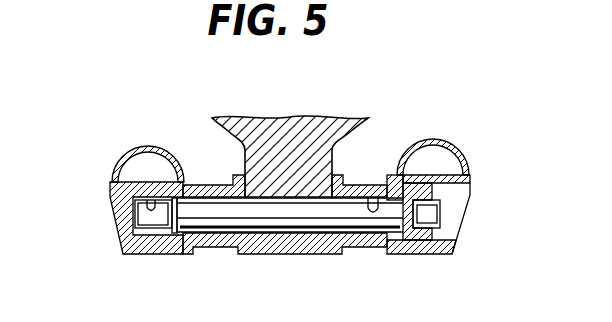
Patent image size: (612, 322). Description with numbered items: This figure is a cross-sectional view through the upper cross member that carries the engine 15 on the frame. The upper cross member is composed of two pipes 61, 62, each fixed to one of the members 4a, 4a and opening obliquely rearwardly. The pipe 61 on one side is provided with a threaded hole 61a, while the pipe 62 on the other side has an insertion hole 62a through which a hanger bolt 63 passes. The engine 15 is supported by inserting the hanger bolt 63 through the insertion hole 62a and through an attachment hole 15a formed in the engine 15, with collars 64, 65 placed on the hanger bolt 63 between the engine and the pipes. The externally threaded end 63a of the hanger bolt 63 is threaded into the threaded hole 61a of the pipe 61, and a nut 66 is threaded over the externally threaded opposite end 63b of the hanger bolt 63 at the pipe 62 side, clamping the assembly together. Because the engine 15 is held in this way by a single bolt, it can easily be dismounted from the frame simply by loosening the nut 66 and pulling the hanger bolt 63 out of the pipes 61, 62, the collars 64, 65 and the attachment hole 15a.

The engine 15 is at (289, 123).
The attachment hole 15a is at (320, 229).
The members 4a is at (125, 158).
The pipe 61 is at (122, 212).
The threaded hole 61a is at (152, 200).
The pipe 62 is at (457, 203).
The insertion hole 62a is at (373, 200).
The hanger bolt 63 is at (286, 236).
The externally threaded end 63a is at (158, 222).
The externally threaded opposite end 63b is at (437, 217).
The collar 64 is at (213, 241).
The collar 65 is at (368, 246).
The nut 66 is at (466, 153).